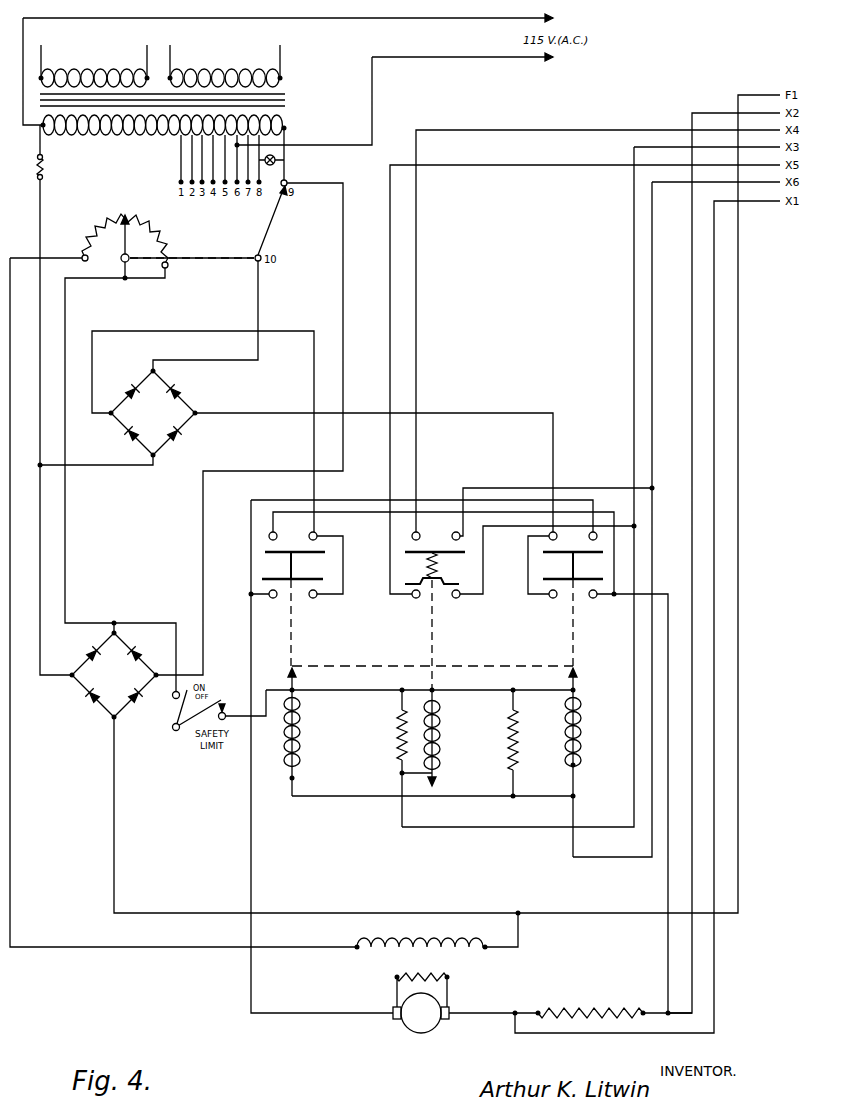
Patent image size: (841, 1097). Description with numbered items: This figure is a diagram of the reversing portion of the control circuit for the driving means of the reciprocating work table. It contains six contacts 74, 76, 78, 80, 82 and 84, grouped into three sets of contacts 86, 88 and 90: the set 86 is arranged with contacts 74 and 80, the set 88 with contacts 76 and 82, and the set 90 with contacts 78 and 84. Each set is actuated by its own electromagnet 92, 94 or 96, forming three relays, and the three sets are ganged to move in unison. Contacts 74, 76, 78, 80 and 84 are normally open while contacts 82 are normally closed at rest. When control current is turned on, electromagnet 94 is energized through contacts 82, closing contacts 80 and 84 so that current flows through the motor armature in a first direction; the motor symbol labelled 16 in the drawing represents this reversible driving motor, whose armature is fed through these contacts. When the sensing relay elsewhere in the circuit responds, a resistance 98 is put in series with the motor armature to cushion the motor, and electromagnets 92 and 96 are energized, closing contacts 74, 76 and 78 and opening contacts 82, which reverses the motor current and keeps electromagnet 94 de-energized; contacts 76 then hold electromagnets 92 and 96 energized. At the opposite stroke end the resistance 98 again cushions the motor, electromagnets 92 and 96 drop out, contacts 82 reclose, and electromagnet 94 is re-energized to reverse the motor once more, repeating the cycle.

The motor 16 is at (412, 1027).
The contacts 74 is at (292, 532).
The contacts 76 is at (433, 530).
The contacts 78 is at (565, 532).
The contacts 80 is at (300, 592).
The contacts 82 is at (438, 595).
The contacts 84 is at (560, 595).
The set of contacts 86 is at (289, 564).
The set of contacts 88 is at (428, 563).
The set of contacts 90 is at (571, 563).
The electromagnet 92 is at (300, 750).
The electromagnet 94 is at (441, 748).
The electromagnet 96 is at (583, 738).
The resistance 98 is at (602, 1010).